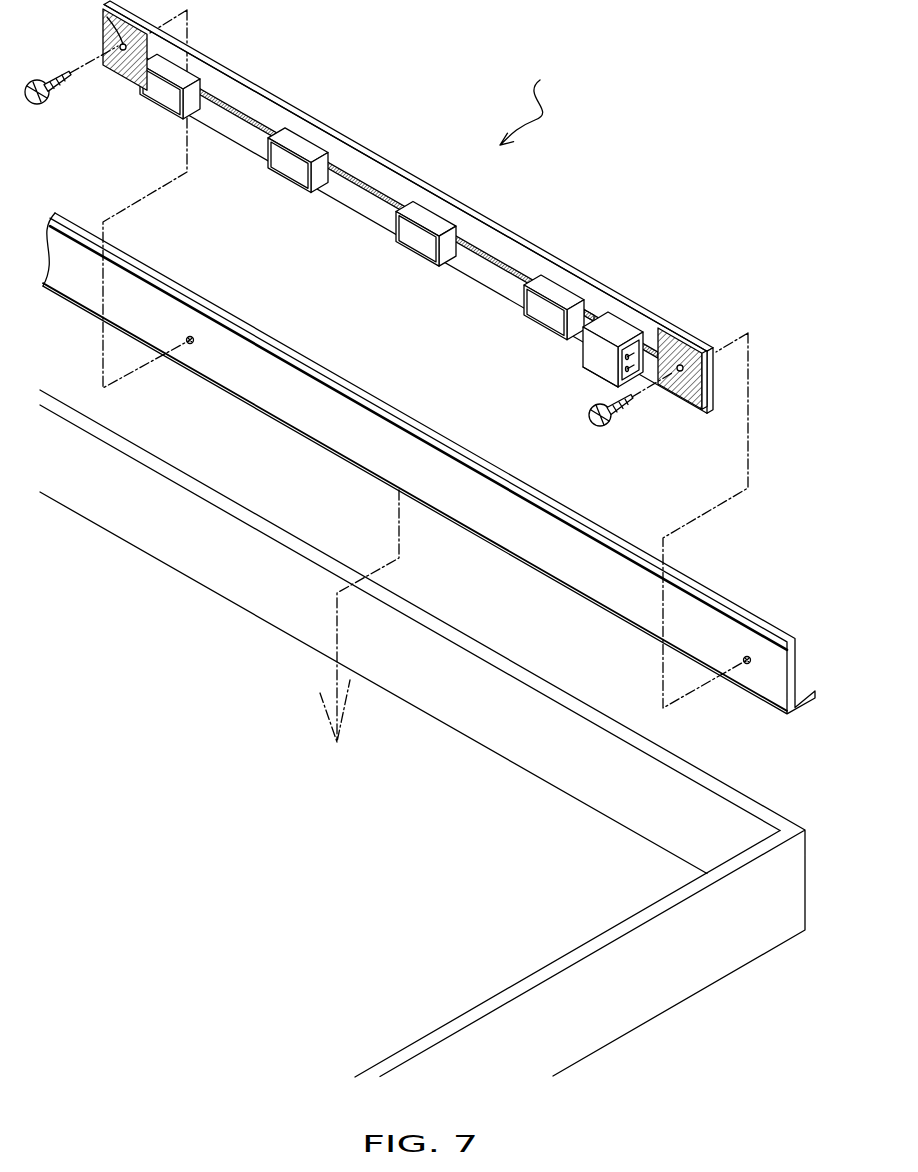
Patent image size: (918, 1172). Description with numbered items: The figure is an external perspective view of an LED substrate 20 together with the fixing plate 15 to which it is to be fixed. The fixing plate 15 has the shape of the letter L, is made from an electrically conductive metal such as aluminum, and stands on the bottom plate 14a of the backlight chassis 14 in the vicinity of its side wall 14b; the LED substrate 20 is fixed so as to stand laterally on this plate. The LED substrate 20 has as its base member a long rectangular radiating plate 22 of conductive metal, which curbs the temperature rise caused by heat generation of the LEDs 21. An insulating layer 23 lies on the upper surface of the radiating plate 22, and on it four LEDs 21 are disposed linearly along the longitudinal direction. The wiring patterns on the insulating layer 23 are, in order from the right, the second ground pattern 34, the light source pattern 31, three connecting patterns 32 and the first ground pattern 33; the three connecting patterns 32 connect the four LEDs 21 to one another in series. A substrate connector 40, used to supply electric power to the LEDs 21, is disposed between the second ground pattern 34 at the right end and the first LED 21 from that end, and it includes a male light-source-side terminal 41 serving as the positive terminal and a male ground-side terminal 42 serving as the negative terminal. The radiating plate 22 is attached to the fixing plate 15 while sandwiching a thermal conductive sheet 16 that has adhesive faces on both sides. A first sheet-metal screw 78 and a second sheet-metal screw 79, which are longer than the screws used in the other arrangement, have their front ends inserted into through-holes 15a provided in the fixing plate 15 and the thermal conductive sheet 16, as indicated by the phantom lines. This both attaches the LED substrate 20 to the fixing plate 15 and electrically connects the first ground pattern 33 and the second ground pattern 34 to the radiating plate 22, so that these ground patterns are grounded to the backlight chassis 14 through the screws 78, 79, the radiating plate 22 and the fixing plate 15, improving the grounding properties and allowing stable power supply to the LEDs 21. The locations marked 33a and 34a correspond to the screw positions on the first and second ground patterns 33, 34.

The backlight chassis 14 is at (695, 997).
The bottom plate 14a is at (528, 943).
The side wall 14b is at (545, 720).
The fixing plate 15 is at (760, 619).
The through-hole 15a is at (190, 345).
The thermal conductive sheet 16 is at (712, 598).
The LED substrate 20 is at (530, 102).
The LED 21 is at (163, 97).
The radiating plate 22 is at (407, 173).
The insulating layer 23 is at (353, 150).
The light source pattern 31 is at (590, 317).
The connecting pattern 32 is at (233, 122).
The first ground pattern 33 is at (103, 42).
The fixing hole 33a is at (107, 17).
The second ground pattern 34 is at (680, 409).
The fixing hole 34a is at (685, 369).
The substrate connector 40 is at (590, 355).
The light-source-side terminal 41 is at (645, 328).
The ground-side terminal 42 is at (597, 373).
The first sheet-metal screw 78 is at (42, 108).
The second sheet-metal screw 79 is at (600, 428).